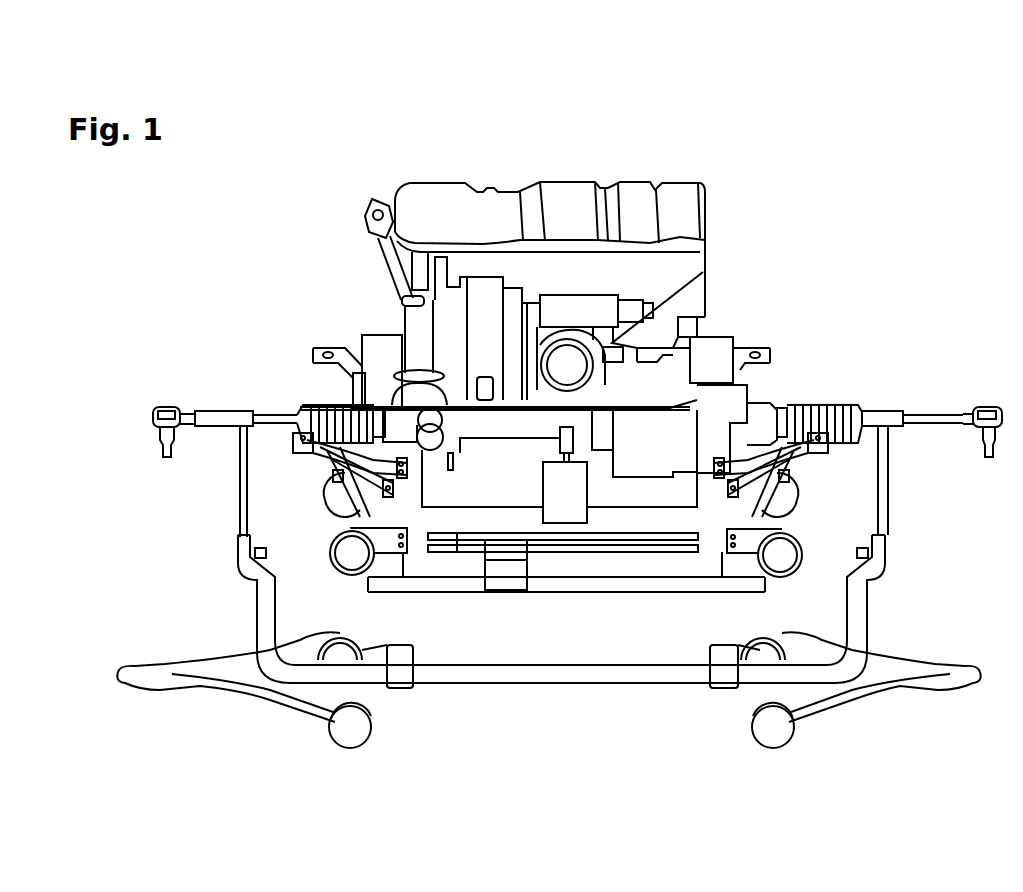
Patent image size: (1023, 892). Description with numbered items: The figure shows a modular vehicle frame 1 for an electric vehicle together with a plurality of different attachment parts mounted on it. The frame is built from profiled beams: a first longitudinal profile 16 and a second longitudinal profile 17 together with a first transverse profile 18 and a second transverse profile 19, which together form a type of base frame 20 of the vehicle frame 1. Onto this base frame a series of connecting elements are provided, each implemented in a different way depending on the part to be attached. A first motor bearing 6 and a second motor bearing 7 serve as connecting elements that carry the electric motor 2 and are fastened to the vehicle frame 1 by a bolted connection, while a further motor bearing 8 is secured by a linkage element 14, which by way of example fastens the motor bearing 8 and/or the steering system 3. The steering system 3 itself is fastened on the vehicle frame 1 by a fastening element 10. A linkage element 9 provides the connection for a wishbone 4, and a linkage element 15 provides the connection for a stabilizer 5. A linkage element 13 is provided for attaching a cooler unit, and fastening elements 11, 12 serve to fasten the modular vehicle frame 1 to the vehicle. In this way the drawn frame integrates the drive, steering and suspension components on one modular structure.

The vehicle frame 1 is at (866, 229).
The electric motor 2 is at (445, 192).
The steering system 3 is at (887, 398).
The wishbone 4 is at (172, 667).
The stabilizer 5 is at (530, 683).
The first motor bearing 6 is at (382, 350).
The second motor bearing 7 is at (720, 340).
The motor bearing 8 is at (568, 372).
The linkage element 9 is at (325, 474).
The fastening element 10 is at (313, 446).
The fastening element 11 is at (502, 578).
The fastening element 12 is at (402, 555).
The linkage element 13 is at (318, 352).
The linkage element 14 is at (560, 512).
The linkage element 15 is at (400, 688).
The first longitudinal profile 16 is at (345, 383).
The second longitudinal profile 17 is at (660, 384).
The first transverse profile 18 is at (606, 590).
The second transverse profile 19 is at (457, 525).
The base frame 20 is at (651, 540).